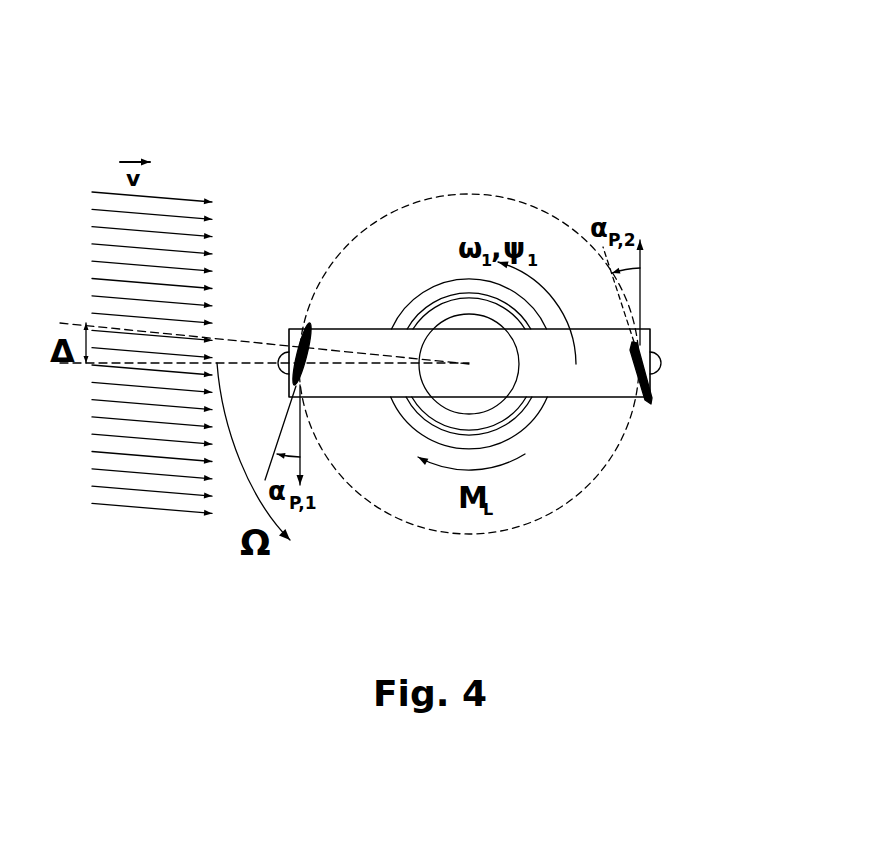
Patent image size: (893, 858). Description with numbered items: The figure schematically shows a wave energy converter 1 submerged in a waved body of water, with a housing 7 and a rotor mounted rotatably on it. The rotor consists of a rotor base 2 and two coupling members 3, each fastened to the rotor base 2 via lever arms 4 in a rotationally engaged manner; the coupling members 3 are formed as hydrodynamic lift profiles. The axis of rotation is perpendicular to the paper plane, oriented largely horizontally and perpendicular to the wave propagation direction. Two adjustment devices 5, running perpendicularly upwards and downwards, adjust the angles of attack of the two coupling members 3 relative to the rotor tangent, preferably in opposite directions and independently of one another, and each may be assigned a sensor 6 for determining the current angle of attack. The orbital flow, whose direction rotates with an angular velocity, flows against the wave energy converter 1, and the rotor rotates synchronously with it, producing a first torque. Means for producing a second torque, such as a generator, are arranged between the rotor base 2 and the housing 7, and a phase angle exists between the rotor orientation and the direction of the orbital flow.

The wave energy converter 1 is at (290, 110).
The rotor base 2 is at (425, 313).
The coupling member 3 is at (292, 348).
The lever arm 4 is at (377, 388).
The adjustment device 5 is at (663, 365).
The sensor 6 is at (730, 457).
The housing 7 is at (430, 288).